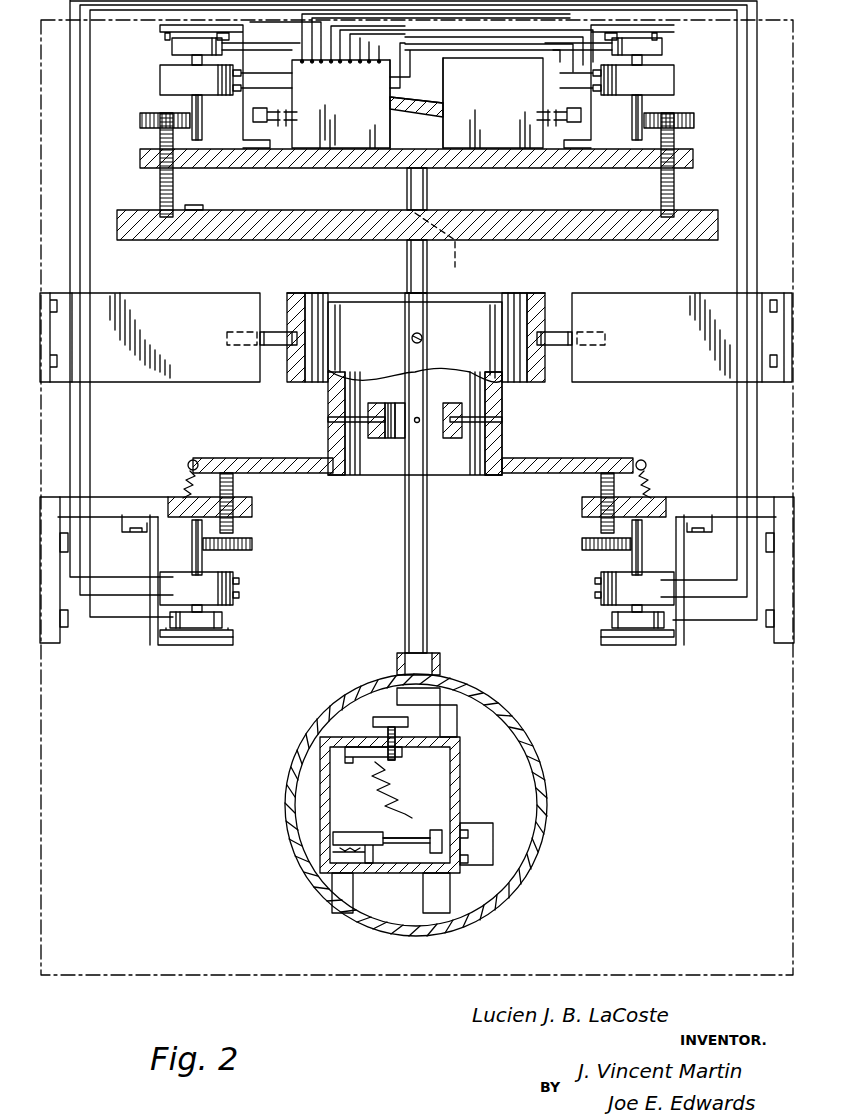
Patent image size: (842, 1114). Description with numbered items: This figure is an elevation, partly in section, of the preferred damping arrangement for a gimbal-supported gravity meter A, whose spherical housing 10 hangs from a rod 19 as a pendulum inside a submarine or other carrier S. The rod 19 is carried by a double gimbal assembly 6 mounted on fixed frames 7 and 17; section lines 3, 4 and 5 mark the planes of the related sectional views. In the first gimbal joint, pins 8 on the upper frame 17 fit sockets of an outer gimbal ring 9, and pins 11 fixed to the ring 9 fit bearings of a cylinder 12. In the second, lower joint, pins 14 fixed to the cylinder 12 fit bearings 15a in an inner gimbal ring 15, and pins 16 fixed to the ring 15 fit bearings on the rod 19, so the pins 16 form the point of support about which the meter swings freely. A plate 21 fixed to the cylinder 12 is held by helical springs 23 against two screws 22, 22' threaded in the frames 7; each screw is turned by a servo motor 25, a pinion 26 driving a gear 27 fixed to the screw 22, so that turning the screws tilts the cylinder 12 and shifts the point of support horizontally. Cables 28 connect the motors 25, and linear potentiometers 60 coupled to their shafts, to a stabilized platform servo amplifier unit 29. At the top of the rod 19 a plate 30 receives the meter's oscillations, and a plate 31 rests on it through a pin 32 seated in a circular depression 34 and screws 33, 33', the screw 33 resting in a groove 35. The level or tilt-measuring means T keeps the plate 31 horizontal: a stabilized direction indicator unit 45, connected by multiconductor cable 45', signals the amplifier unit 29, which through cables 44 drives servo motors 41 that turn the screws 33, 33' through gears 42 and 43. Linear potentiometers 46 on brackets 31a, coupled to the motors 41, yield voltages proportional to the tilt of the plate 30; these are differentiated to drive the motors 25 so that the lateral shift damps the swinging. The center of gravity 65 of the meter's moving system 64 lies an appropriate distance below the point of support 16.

The section line 3 is at (817, 190).
The section line 4 is at (817, 483).
The section line 5 is at (668, 337).
The double gimbal assembly 6 is at (325, 391).
The fixed frame 7 is at (108, 497).
The shaft or pin 8 is at (272, 332).
The outer gimbal ring 9 is at (310, 305).
The spherical housing 10 is at (520, 734).
The shaft or pin 11 is at (412, 340).
The cylinder 12 is at (504, 440).
The shaft or pin 14 is at (328, 419).
The inner gimbal ring 15 is at (378, 405).
The socket or bearing 15a is at (452, 404).
The shaft or pin 16 is at (418, 424).
The upper frame 17 is at (115, 380).
The rod 19 is at (428, 531).
The plate 21 is at (574, 458).
The screw 22 is at (231, 514).
The screw 22' is at (443, 505).
The helical spring 23 is at (193, 460).
The servo motor 25 is at (233, 588).
The pinion 26 is at (205, 560).
The gear 27 is at (252, 545).
The cable 28 is at (92, 540).
The stabilized platform servo amplifier unit 29 is at (352, 150).
The plate 30 is at (540, 238).
The stabilized platform 31 is at (503, 165).
The bracket 31a is at (243, 127).
The pin 32 is at (430, 182).
The screw 33 is at (187, 165).
The screw 33' is at (635, 165).
The circular depression 34 is at (433, 253).
The groove 35 is at (190, 213).
The servo motor 41 is at (160, 78).
The gear 42 is at (203, 101).
The gear 43 is at (140, 120).
The electrical cable 44 is at (508, 76).
The stabilized direction indicator unit 45 is at (416, 103).
The multiconductor cable 45' is at (416, 92).
The linear potentiometer 46 is at (172, 45).
The linear potentiometer 60 is at (222, 620).
The gravity meter moving system 64 is at (433, 829).
The center of gravity 65 is at (415, 846).
The gravity meter A is at (548, 782).
The submarine or other carrier S is at (52, 797).
The level or tilt-measuring means T is at (301, 170).